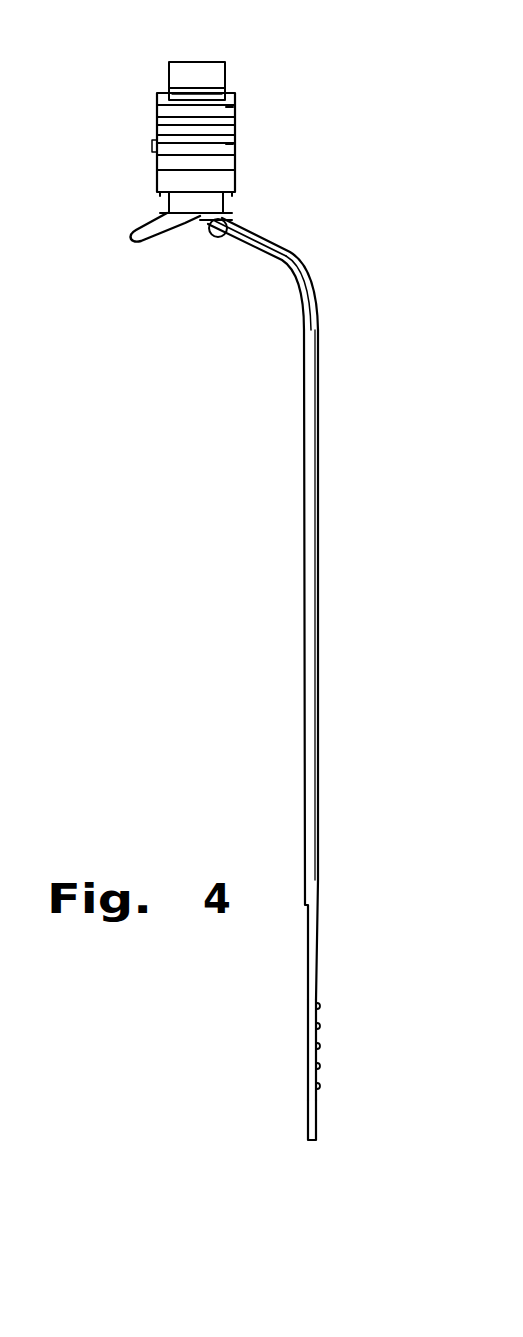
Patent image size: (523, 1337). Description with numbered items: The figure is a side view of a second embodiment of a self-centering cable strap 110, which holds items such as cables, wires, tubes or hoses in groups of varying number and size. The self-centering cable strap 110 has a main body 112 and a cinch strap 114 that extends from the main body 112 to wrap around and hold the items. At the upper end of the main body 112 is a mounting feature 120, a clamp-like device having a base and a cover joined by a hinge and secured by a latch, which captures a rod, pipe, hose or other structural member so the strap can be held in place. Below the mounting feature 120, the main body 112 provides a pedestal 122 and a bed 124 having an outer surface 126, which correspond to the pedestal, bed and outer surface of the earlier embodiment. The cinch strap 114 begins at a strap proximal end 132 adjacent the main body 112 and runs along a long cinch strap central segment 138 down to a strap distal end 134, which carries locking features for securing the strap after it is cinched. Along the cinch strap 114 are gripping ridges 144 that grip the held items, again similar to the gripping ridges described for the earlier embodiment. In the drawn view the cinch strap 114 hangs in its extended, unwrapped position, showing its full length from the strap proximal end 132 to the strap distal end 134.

The self-centering cable strap 110 is at (358, 150).
The main body 112 is at (138, 126).
The cinch strap 114 is at (272, 500).
The mounting feature 120 is at (252, 68).
The pedestal 122 is at (212, 200).
The bed 124 is at (244, 228).
The outer surface 126 is at (184, 224).
The strap proximal end 132 is at (292, 262).
The strap distal end 134 is at (309, 1108).
The cinch strap central segment 138 is at (312, 603).
The gripping ridges 144 is at (316, 1042).